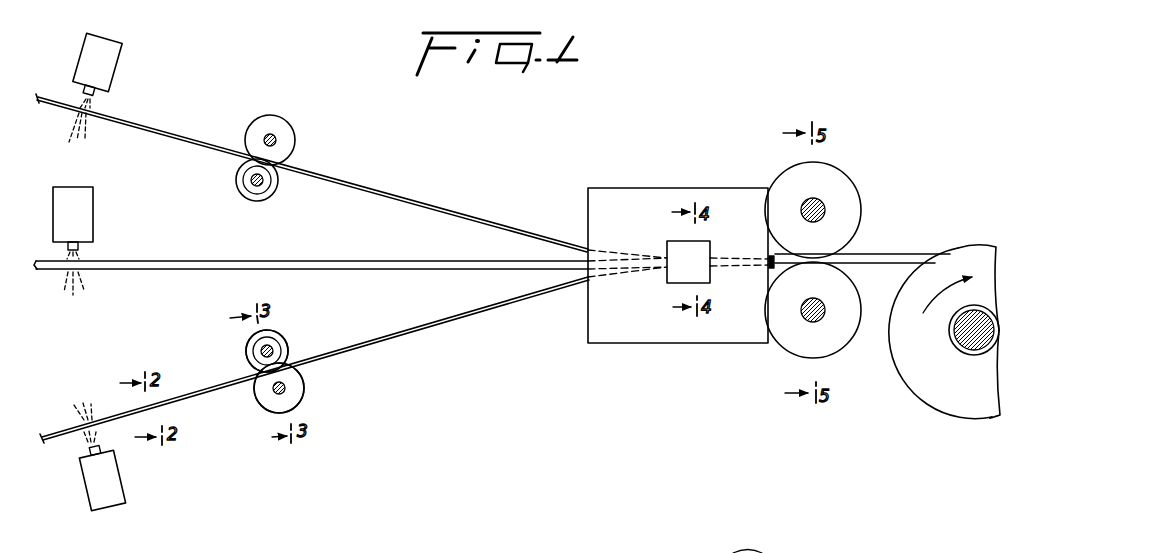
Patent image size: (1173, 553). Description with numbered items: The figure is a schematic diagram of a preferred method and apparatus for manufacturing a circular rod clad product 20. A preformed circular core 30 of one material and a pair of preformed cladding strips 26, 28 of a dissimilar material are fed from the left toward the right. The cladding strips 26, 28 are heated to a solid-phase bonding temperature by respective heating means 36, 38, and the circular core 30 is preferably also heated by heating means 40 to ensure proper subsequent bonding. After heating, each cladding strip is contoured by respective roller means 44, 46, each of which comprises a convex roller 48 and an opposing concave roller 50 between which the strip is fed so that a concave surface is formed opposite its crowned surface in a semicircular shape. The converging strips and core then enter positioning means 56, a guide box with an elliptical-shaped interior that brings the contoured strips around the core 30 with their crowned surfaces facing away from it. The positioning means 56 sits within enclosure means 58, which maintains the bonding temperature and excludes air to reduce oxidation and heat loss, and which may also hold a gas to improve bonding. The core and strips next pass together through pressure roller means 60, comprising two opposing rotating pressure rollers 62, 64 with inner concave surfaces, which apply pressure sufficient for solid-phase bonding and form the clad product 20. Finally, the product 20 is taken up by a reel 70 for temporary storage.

The circular rod clad product 20 is at (865, 257).
The cladding strip 26 is at (170, 133).
The cladding strip 28 is at (205, 390).
The circular core 30 is at (142, 272).
The heating means 36 is at (105, 43).
The heating means 38 is at (112, 500).
The heating means 40 is at (87, 217).
The roller means 44 is at (291, 117).
The roller means 46 is at (313, 387).
The convex roller 48 is at (280, 337).
The concave roller 50 is at (297, 395).
The positioning means 56 is at (675, 277).
The enclosure means 58 is at (642, 195).
The pressure roller means 60 is at (823, 258).
The pressure roller 62 is at (848, 208).
The pressure roller 64 is at (785, 347).
The reel 70 is at (943, 393).